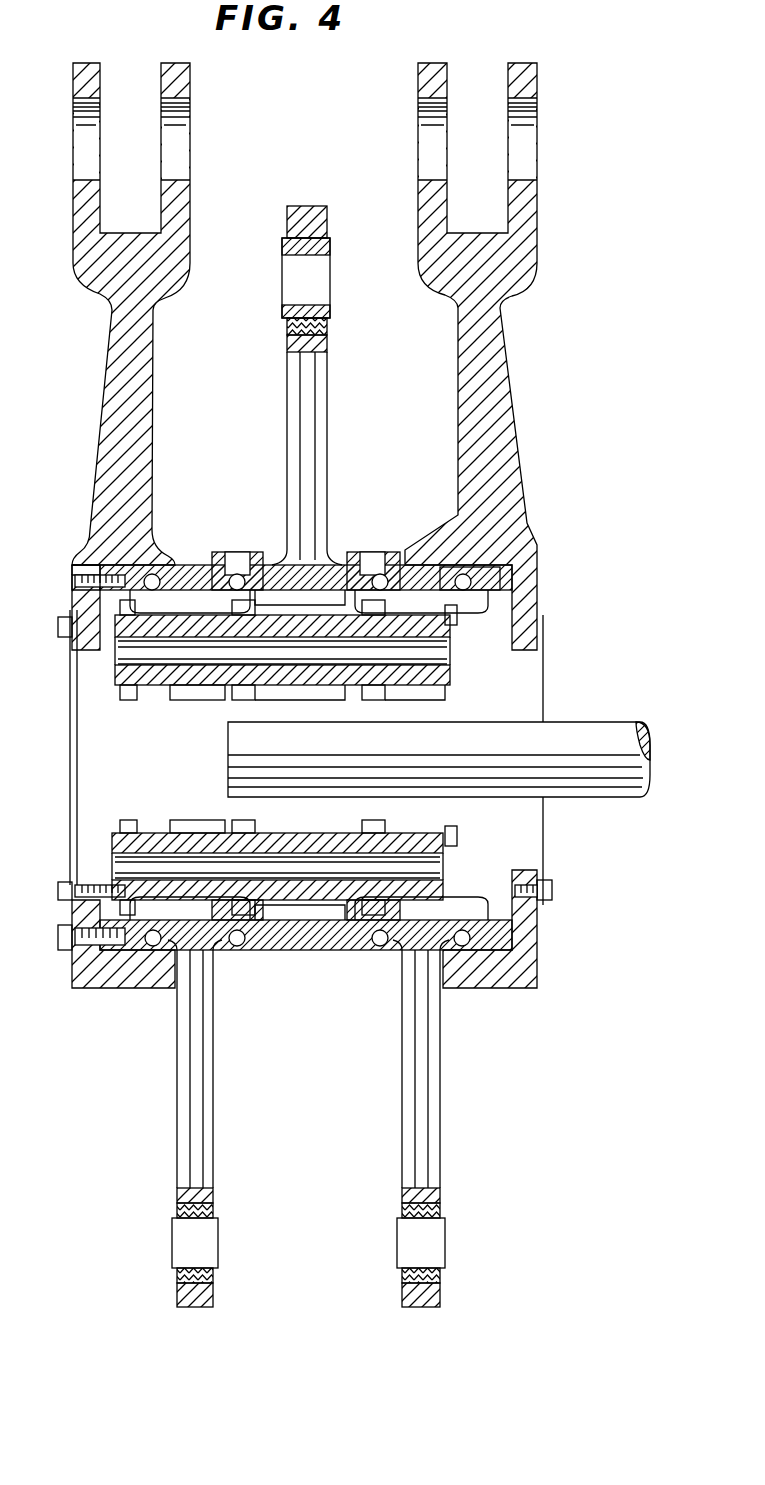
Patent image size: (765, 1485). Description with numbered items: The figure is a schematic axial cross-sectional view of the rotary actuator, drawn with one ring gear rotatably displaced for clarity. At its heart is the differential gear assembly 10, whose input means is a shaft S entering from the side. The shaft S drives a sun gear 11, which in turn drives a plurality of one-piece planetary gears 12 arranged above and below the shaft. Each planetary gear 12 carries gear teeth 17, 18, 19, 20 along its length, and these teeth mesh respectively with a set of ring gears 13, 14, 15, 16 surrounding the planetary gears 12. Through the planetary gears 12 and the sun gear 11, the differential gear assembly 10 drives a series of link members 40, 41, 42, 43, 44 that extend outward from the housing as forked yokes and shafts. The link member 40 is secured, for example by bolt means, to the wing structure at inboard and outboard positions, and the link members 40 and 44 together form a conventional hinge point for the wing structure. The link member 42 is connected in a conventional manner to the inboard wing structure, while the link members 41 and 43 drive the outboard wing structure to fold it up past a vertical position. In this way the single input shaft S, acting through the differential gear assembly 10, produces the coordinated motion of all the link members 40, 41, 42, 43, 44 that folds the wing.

The differential gear assembly 10 is at (103, 772).
The sun gear 11 is at (245, 710).
The one-piece planetary gears 12 is at (98, 668).
The ring gear 13 is at (78, 560).
The ring gear 14 is at (200, 572).
The ring gear 15 is at (340, 565).
The ring gear 16 is at (472, 588).
The gear teeth 17 is at (125, 699).
The gear teeth 18 is at (185, 699).
The gear teeth 19 is at (380, 696).
The gear teeth 20 is at (435, 692).
The link member 40 is at (110, 350).
The link member 41 is at (180, 1090).
The link member 42 is at (287, 400).
The link member 43 is at (405, 1085).
The link member 44 is at (505, 360).
The shaft S is at (643, 720).